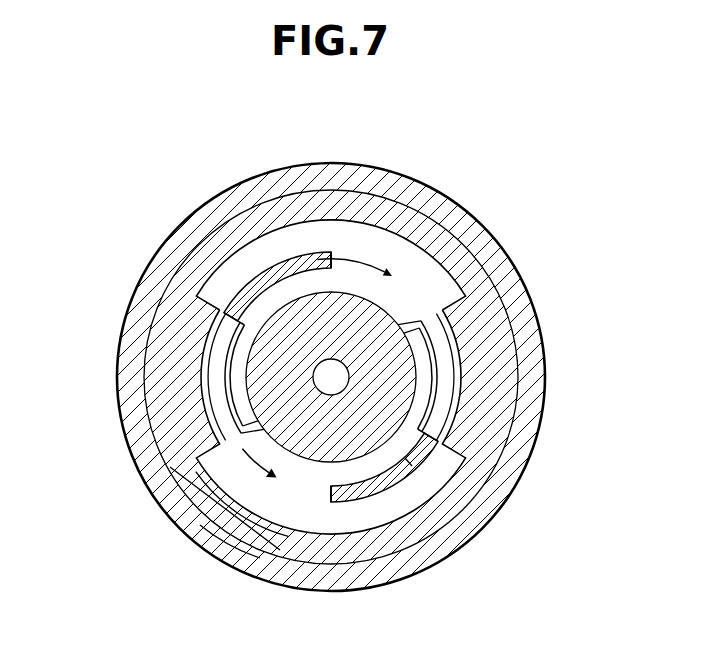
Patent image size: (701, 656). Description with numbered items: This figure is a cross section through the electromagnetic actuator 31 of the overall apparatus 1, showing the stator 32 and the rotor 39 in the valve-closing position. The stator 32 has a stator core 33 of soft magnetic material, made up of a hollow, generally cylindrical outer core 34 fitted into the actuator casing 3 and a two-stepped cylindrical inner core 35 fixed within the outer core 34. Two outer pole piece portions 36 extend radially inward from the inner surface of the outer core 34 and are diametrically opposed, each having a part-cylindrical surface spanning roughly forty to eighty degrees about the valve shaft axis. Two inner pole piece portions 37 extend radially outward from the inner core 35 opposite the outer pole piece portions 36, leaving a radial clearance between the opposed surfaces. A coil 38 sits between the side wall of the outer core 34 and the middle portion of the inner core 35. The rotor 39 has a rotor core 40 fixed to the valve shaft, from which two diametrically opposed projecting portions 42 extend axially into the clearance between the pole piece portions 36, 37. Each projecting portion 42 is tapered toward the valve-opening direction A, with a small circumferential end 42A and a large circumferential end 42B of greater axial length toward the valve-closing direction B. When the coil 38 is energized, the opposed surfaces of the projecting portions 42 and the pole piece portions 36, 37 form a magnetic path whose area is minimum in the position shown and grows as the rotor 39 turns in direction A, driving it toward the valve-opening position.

The rotary damper 1 is at (424, 177).
The actuator casing 3 is at (455, 208).
The electromagnetic actuator 31 is at (340, 180).
The stator 32 is at (238, 548).
The stator core 33 is at (480, 470).
The outer core 34 is at (490, 305).
The inner core 35 is at (308, 447).
The outer pole piece portions 36 is at (175, 385).
The inner pole piece portions 37 is at (245, 345).
The coil 38 is at (225, 497).
The rotor 39 is at (408, 462).
The rotor core 40 is at (410, 463).
The projecting portions 42 is at (185, 297).
The small circumferential end 42A is at (232, 440).
The large circumferential end 42B is at (302, 250).